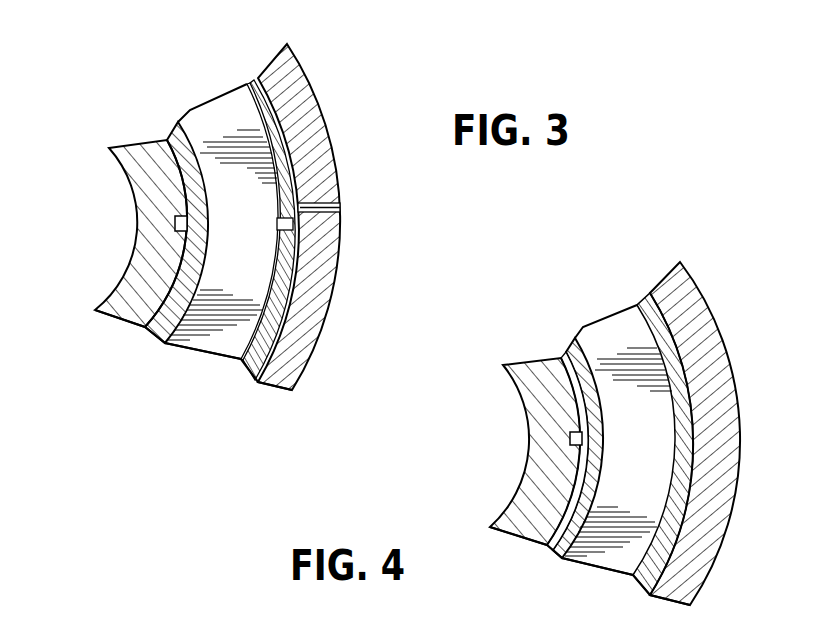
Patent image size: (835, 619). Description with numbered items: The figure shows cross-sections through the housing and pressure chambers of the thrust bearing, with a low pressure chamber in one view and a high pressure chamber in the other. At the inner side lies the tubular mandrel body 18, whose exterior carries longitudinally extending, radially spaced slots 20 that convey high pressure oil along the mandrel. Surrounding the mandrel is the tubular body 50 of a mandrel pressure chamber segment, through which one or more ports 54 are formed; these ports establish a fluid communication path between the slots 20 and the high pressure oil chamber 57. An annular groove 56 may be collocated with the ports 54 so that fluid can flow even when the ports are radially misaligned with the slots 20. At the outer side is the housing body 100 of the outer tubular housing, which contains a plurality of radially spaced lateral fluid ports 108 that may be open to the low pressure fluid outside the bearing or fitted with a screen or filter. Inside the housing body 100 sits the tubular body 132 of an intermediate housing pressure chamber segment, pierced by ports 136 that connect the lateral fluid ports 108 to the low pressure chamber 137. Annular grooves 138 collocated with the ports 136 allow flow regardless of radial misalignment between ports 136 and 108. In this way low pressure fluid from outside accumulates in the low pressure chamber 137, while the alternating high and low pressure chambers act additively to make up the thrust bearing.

In FIG. 3, the tubular mandrel body 18 is at (137, 165).
In FIG. 4, the tubular mandrel body 18 is at (512, 528).
In FIG. 3, the slots 20 is at (175, 226).
In FIG. 3, the tubular body 50 is at (175, 135).
In FIG. 4, the tubular body 50 is at (590, 487).
In FIG. 4, the ports 54 is at (600, 440).
In FIG. 4, the annular groove 56 is at (562, 515).
In FIG. 4, the high pressure oil chambers 57 is at (650, 480).
In FIG. 3, the housing body 100 is at (293, 92).
In FIG. 4, the housing body 100 is at (690, 303).
In FIG. 3, the lateral fluid ports 108 is at (327, 203).
In FIG. 3, the tubular body 132 is at (283, 172).
In FIG. 4, the tubular body 132 is at (672, 355).
In FIG. 3, the ports 136 is at (293, 222).
In FIG. 3, the low pressure chambers 137 is at (266, 256).
In FIG. 3, the annular grooves 138 is at (285, 128).